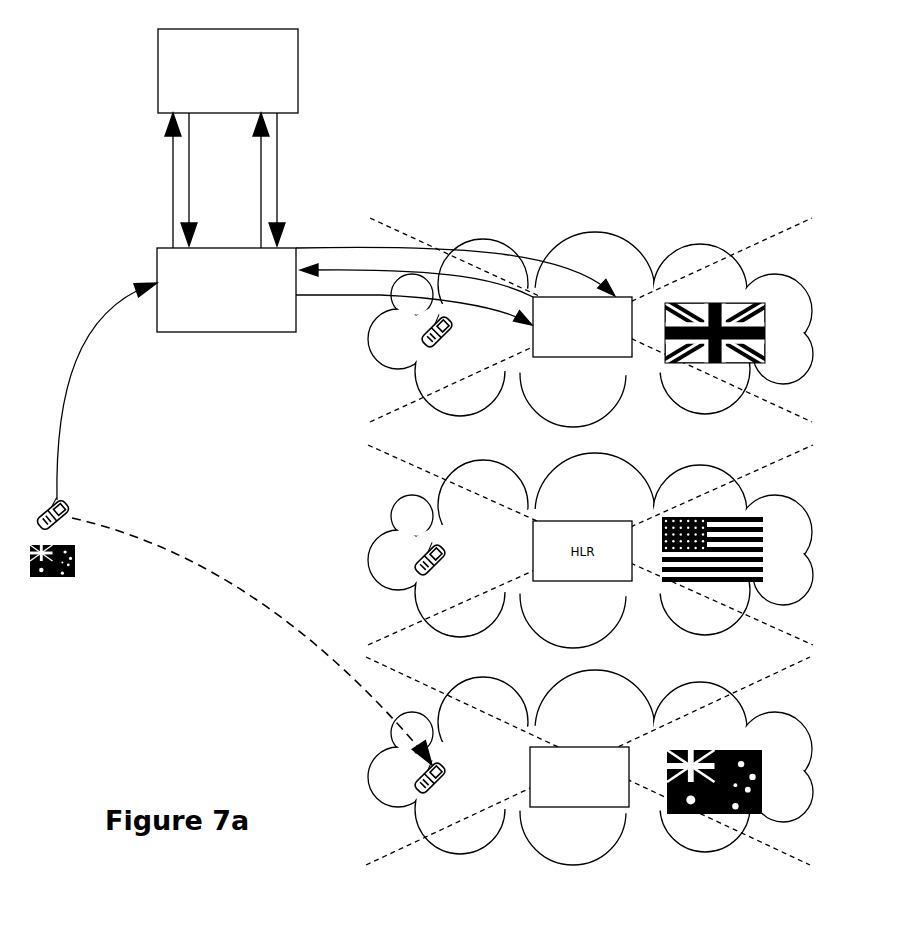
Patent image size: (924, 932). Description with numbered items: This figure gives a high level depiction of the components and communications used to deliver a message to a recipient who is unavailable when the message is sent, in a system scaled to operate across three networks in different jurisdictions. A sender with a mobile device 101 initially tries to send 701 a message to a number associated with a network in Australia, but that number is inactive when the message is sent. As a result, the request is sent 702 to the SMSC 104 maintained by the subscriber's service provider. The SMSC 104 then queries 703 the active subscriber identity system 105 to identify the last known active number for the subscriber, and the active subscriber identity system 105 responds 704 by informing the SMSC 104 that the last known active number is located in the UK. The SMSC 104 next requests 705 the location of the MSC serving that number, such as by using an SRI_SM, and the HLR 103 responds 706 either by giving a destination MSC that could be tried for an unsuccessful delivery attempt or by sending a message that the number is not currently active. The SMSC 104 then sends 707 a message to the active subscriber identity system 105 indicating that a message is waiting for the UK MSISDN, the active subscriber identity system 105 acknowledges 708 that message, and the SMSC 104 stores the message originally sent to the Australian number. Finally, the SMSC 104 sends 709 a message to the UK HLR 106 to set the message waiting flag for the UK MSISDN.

The mobile device of sender 101 is at (43, 506).
The HLR 103 is at (579, 790).
The SMSC 104 is at (226, 304).
The active subscriber identity system 105 is at (249, 71).
The UK HLR 106 is at (582, 339).
The initial message send 701 is at (252, 641).
The request to SMSC 702 is at (102, 391).
The query to active subscriber identity system 703 is at (159, 180).
The response with last known active number 704 is at (203, 179).
The MSC location request 705 is at (455, 270).
The HLR response 706 is at (416, 274).
The message waiting notification 707 is at (244, 180).
The acknowledgement 708 is at (292, 179).
The message waiting flag message 709 is at (414, 310).